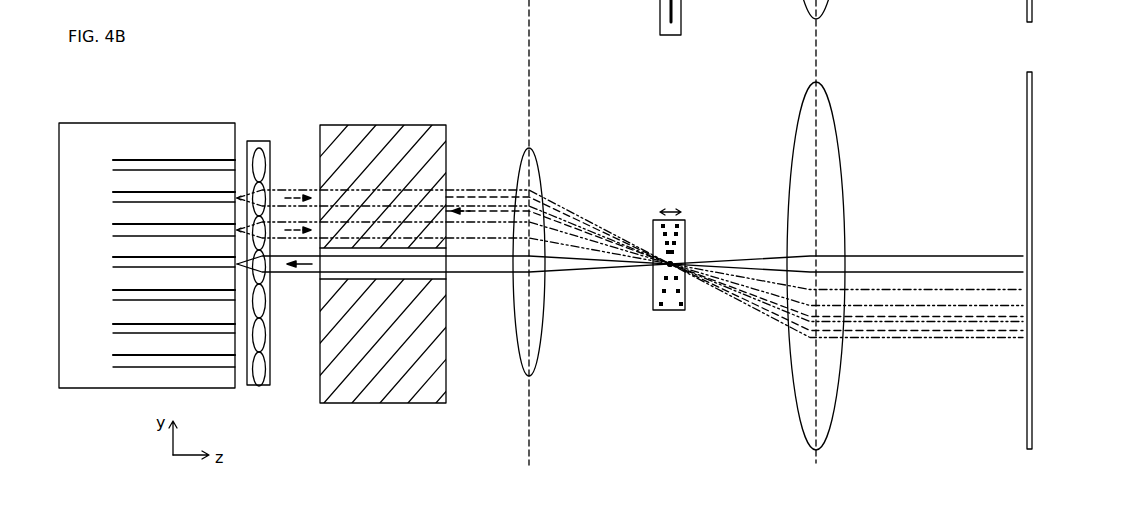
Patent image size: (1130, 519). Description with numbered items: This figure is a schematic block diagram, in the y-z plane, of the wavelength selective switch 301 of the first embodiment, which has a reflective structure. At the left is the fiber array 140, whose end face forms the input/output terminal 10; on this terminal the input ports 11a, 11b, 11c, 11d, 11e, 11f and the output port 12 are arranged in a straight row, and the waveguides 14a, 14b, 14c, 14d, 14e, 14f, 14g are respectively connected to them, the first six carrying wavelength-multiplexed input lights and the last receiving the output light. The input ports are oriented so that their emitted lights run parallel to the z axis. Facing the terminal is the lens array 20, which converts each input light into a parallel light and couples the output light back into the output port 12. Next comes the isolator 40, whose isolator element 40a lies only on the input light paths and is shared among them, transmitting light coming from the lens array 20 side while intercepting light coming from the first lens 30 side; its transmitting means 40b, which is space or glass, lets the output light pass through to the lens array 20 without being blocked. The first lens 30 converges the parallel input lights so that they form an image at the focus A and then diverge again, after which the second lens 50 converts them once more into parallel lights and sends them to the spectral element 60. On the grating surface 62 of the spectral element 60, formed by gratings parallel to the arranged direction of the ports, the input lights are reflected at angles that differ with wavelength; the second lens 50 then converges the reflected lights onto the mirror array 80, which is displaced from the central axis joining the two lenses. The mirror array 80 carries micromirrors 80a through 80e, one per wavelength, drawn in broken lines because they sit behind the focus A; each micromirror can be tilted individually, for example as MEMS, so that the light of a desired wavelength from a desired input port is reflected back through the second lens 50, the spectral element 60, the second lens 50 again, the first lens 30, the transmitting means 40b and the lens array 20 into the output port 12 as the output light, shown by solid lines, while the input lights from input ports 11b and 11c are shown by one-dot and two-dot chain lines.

The input/output terminal 10 is at (152, 256).
The input port 11a is at (229, 160).
The input port 11b is at (229, 192).
The input port 11c is at (229, 224).
The input port 11d is at (229, 290).
The input port 11e is at (229, 324).
The input port 11f is at (229, 355).
The output port 12 is at (229, 257).
The waveguide 14a is at (152, 151).
The waveguide 14b is at (152, 183).
The waveguide 14c is at (152, 216).
The waveguide 14d is at (152, 281).
The waveguide 14e is at (152, 315).
The waveguide 14f is at (153, 347).
The waveguide 14g is at (152, 248).
The lens array 20 is at (255, 141).
The first lens 30 is at (539, 154).
The isolator 40 is at (378, 243).
The isolator element 40a is at (445, 155).
The transmitting means 40b is at (442, 279).
The second lens 50 is at (820, 84).
The spectral element 60 is at (1007, 254).
The grating surface 62 is at (1024, 110).
The mirror array 80 is at (658, 185).
The micromirror 80a is at (653, 235).
The micromirror 80e is at (662, 14).
The focus A is at (670, 262).
The fiber array 140 is at (152, 123).
The wavelength selective switch 301 is at (1088, 73).